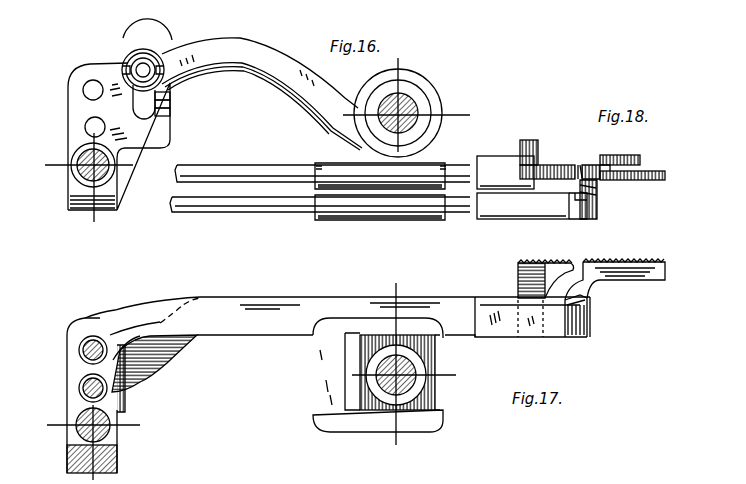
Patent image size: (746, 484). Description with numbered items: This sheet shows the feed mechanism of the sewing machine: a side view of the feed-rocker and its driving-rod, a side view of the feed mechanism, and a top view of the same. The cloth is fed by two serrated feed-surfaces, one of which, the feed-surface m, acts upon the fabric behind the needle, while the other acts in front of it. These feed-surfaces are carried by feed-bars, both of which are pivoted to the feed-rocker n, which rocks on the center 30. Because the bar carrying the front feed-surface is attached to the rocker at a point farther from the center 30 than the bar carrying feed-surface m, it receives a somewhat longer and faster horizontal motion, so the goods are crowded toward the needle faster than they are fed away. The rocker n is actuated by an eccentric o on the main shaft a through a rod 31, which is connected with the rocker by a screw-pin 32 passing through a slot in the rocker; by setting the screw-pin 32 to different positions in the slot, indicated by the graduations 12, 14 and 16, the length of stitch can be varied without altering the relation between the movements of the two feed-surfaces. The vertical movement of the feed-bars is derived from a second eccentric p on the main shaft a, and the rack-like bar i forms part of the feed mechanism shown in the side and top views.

In FIG. 16, the feed-rocker n is at (68, 107).
In FIG. 17, the feed-rocker n is at (66, 368).
In FIG. 16, the center 30 is at (80, 170).
In FIG. 17, the center 30 is at (103, 437).
In FIG. 16, the screw-pin 32 is at (126, 60).
In FIG. 16, the rod 31 is at (272, 80).
In FIG. 16, the scale mark 16 is at (162, 96).
In FIG. 16, the scale mark 14 is at (162, 104).
In FIG. 16, the scale mark 12 is at (162, 112).
In FIG. 16, the main shaft a is at (406, 98).
In FIG. 17, the main shaft a is at (405, 408).
In FIG. 16, the eccentric o is at (420, 104).
In FIG. 18, the feed-surface m is at (538, 152).
In FIG. 17, the feed-surface m is at (560, 265).
In FIG. 18, the toothed rack bar i is at (655, 176).
In FIG. 17, the toothed rack bar i is at (665, 262).
In FIG. 17, the eccentric p is at (423, 365).